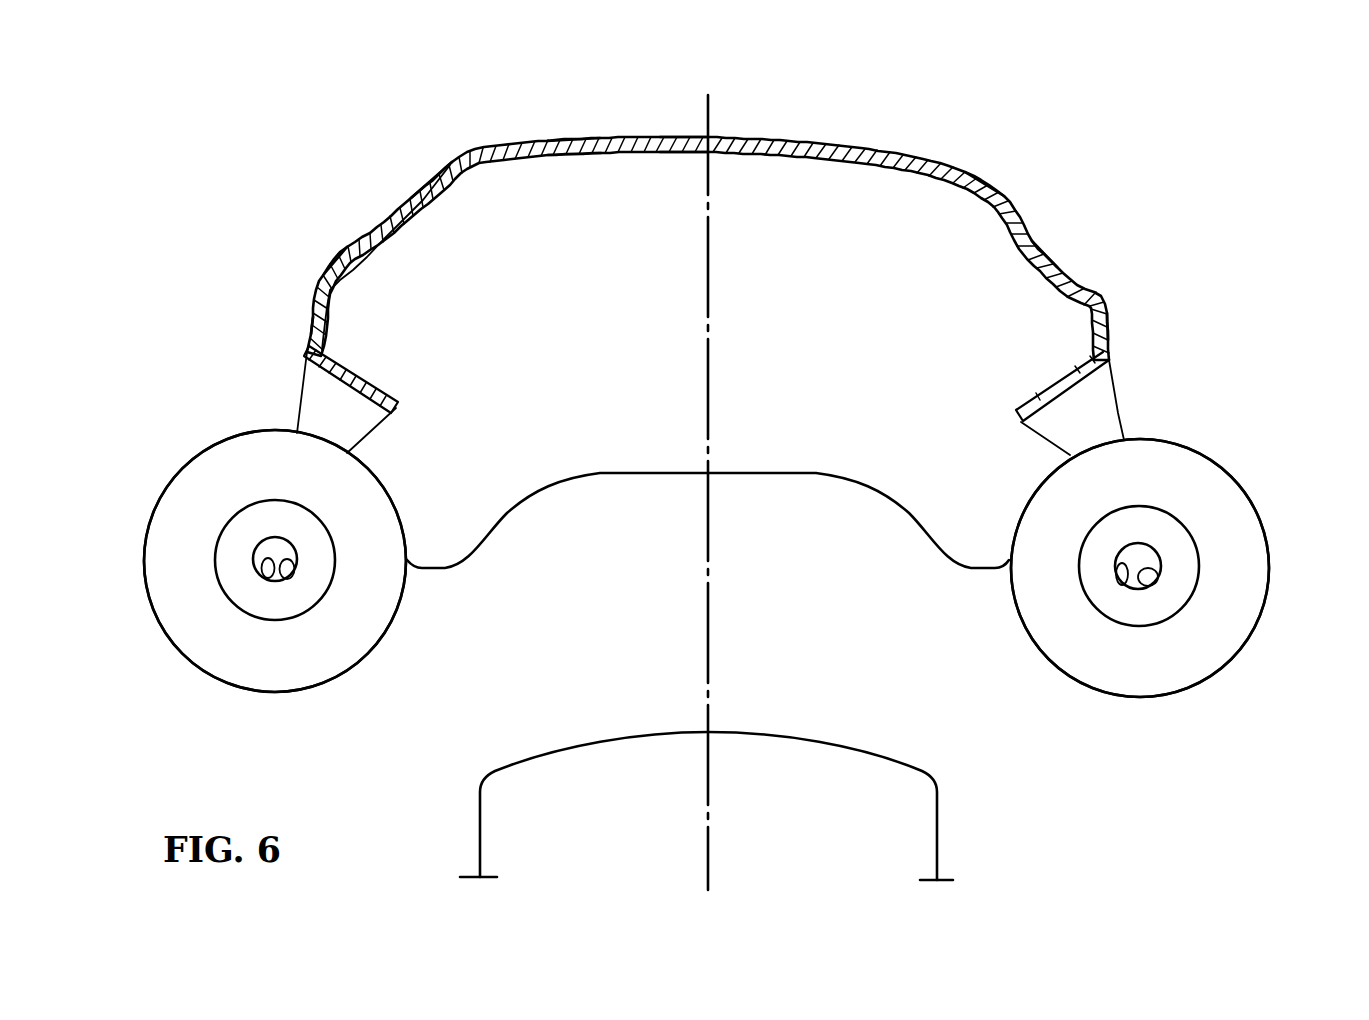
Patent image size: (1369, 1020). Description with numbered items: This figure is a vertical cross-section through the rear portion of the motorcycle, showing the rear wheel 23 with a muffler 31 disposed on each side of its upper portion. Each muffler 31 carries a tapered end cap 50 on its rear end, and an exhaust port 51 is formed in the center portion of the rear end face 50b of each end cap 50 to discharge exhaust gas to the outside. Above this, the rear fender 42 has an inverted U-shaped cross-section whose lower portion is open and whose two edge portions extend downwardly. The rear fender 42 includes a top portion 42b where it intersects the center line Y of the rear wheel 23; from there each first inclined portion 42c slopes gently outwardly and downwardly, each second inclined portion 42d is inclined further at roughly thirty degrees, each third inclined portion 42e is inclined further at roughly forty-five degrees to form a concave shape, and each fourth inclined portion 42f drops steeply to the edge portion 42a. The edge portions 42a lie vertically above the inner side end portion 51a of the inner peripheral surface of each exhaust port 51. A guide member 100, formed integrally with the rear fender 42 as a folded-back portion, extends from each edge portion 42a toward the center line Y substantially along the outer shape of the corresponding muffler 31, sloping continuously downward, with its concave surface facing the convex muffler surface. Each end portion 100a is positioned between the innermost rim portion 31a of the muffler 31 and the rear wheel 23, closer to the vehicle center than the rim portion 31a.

The rear wheel 23 is at (917, 843).
The muffler 31 is at (146, 545).
The innermost rim portion 31a is at (407, 577).
The rear fender 42 is at (830, 150).
The edge portion 42a is at (307, 352).
The top portion 42b is at (700, 137).
The first inclined portion 42c is at (586, 137).
The second inclined portion 42d is at (440, 167).
The third inclined portion 42e is at (350, 245).
The fourth inclined portion 42f is at (310, 316).
The end cap 50 is at (190, 503).
The rear end face 50b is at (228, 558).
The exhaust port 51 is at (250, 565).
The inner side end portion 51a is at (277, 580).
The guide member 100 is at (373, 374).
The end portion 100a is at (397, 412).
The center line Y is at (709, 673).